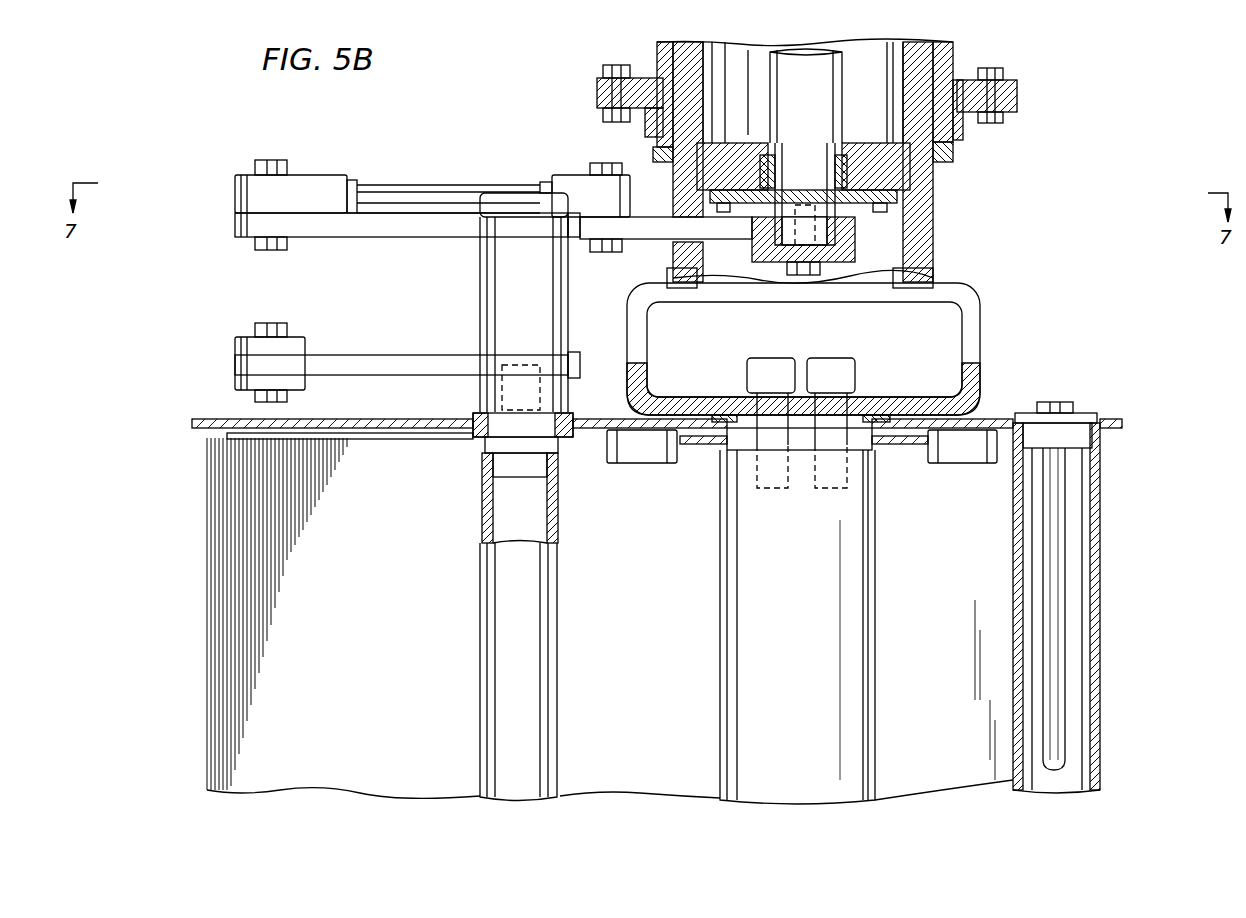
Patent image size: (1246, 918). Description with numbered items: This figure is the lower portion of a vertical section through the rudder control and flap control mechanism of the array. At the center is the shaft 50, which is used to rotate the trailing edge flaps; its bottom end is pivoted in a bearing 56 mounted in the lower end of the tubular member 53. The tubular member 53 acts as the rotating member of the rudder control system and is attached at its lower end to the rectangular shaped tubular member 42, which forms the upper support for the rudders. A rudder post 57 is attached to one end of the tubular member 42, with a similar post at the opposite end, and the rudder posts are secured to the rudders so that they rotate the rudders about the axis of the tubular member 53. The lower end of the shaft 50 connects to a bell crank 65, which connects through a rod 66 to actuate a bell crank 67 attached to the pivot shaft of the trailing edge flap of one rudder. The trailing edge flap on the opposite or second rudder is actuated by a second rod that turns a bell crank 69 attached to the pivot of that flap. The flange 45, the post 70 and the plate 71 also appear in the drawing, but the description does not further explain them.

The support frame 42 is at (972, 308).
The housing flange 45 is at (953, 55).
The piston rod 50 is at (842, 87).
The housing 53 is at (934, 226).
The nut 56 is at (950, 165).
The tube 57 is at (872, 600).
The arm 65 is at (638, 240).
The connecting rod 66 is at (418, 185).
The upper link 67 is at (377, 238).
The lower link 69 is at (380, 355).
The guide post 70 is at (558, 510).
The mounting plate 71 is at (570, 414).